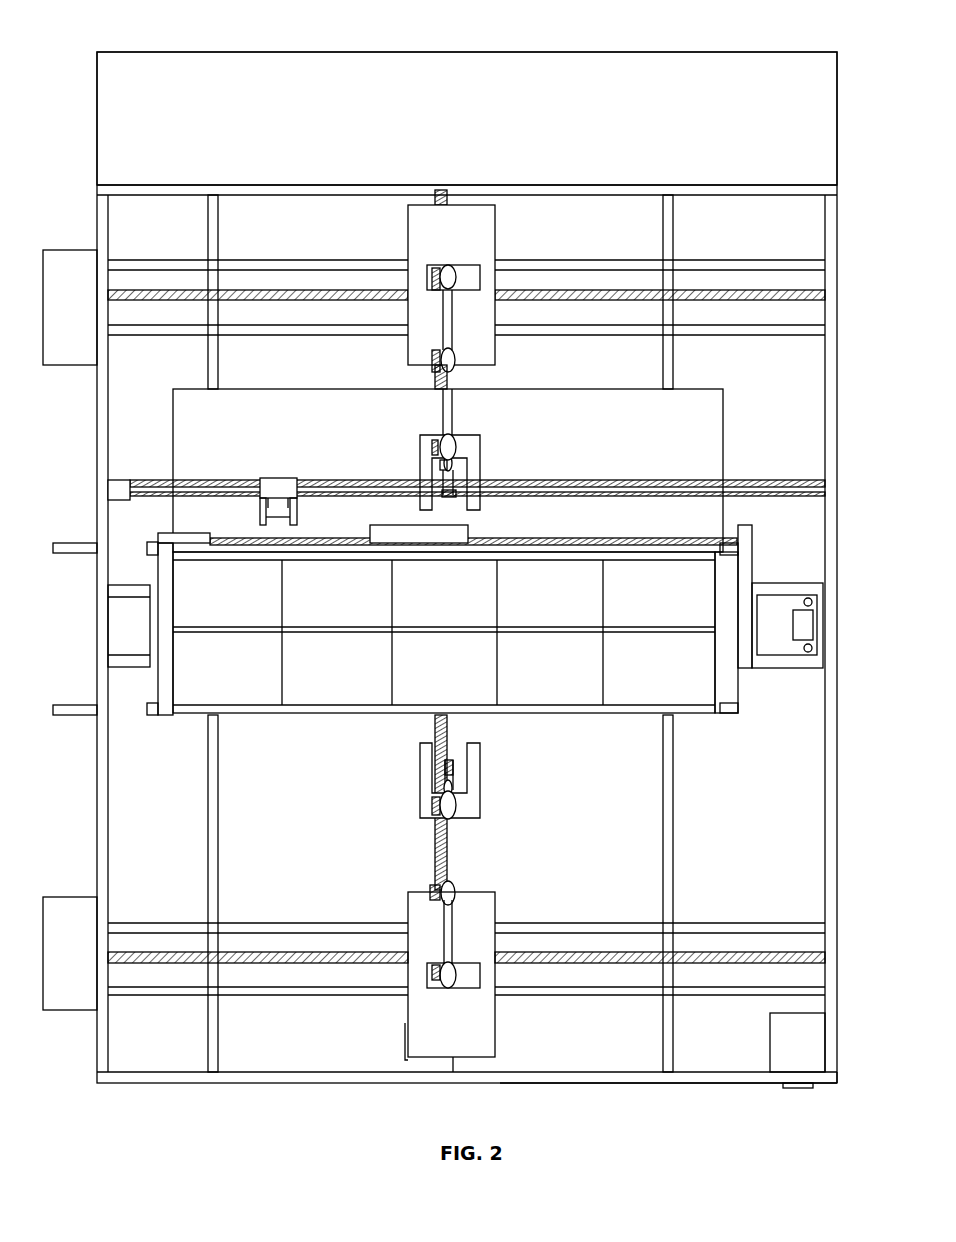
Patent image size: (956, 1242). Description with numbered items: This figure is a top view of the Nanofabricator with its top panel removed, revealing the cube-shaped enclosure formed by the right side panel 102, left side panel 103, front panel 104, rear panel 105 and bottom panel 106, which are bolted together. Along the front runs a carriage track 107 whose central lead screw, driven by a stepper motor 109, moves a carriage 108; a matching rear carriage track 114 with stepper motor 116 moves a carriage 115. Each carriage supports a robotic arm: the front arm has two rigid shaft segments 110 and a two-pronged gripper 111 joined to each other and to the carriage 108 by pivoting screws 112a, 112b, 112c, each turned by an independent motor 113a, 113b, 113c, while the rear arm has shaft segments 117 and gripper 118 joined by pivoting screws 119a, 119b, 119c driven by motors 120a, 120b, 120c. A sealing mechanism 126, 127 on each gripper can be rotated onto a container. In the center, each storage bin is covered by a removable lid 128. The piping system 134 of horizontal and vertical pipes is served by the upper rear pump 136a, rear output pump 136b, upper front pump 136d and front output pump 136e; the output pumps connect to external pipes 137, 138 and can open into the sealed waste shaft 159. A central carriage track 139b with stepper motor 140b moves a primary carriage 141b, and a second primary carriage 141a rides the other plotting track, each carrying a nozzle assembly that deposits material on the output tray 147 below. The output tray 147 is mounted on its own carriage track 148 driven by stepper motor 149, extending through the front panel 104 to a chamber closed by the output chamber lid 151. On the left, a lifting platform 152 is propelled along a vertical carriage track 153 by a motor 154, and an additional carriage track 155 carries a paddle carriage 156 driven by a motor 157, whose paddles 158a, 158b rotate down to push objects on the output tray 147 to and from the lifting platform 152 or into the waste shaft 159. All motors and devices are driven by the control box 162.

The right side panel 102 is at (103, 1062).
The left side panel 103 is at (830, 1050).
The front panel 104 is at (103, 192).
The rear panel 105 is at (545, 1075).
The bottom panel 106 is at (592, 797).
The front carriage track 107 is at (127, 262).
The carriage 108 is at (415, 222).
The stepper motor 109 is at (434, 307).
The rigid shaft segments 110 is at (450, 478).
The two-pronged gripper 111 is at (478, 472).
The pivoting screw 112a is at (448, 307).
The pivoting screw 112b is at (452, 477).
The pivoting screw 112c is at (448, 465).
The motor 113a is at (437, 268).
The motor 113b is at (447, 443).
The motor 113c is at (433, 438).
The rear carriage track 114 is at (127, 990).
The carriage 115 is at (451, 982).
The stepper motor 116 is at (434, 953).
The rigid shaft segments 117 is at (453, 925).
The two-pronged gripper 118 is at (473, 773).
The pivoting screw 119a is at (452, 792).
The pivoting screw 119b is at (430, 897).
The pivoting screw 119c is at (440, 973).
The motor 120a is at (433, 805).
The motor 120b is at (447, 897).
The motor 120c is at (427, 980).
The sealing mechanism 126 is at (462, 470).
The sealing mechanism 127 is at (450, 805).
The lid 128 is at (444, 632).
The piping system 134 is at (200, 712).
The upper rear pump 136a is at (726, 712).
The rear output pump 136b is at (152, 712).
The upper front pump 136d is at (728, 547).
The front output pump 136e is at (152, 548).
The external pipe 137 is at (80, 712).
The external pipe 138 is at (83, 548).
The carriage track 139b is at (683, 538).
The stepper motor 140b is at (210, 538).
The primary carriage 141a is at (373, 630).
The primary carriage 141b is at (413, 532).
The output tray 147 is at (448, 470).
The output tray carriage track 148 is at (212, 1052).
The stepper motor 149 is at (410, 1065).
The output chamber lid 151 is at (467, 118).
The lifting platform 152 is at (787, 625).
The vertical carriage track 153 is at (808, 650).
The motor 154 is at (800, 640).
The carriage track 155 is at (155, 487).
The paddle carriage 156 is at (258, 480).
The motor 157 is at (120, 490).
The paddle 158a is at (265, 495).
The paddle 158b is at (285, 517).
The sealed waste shaft 159 is at (129, 626).
The control box 162 is at (797, 1050).